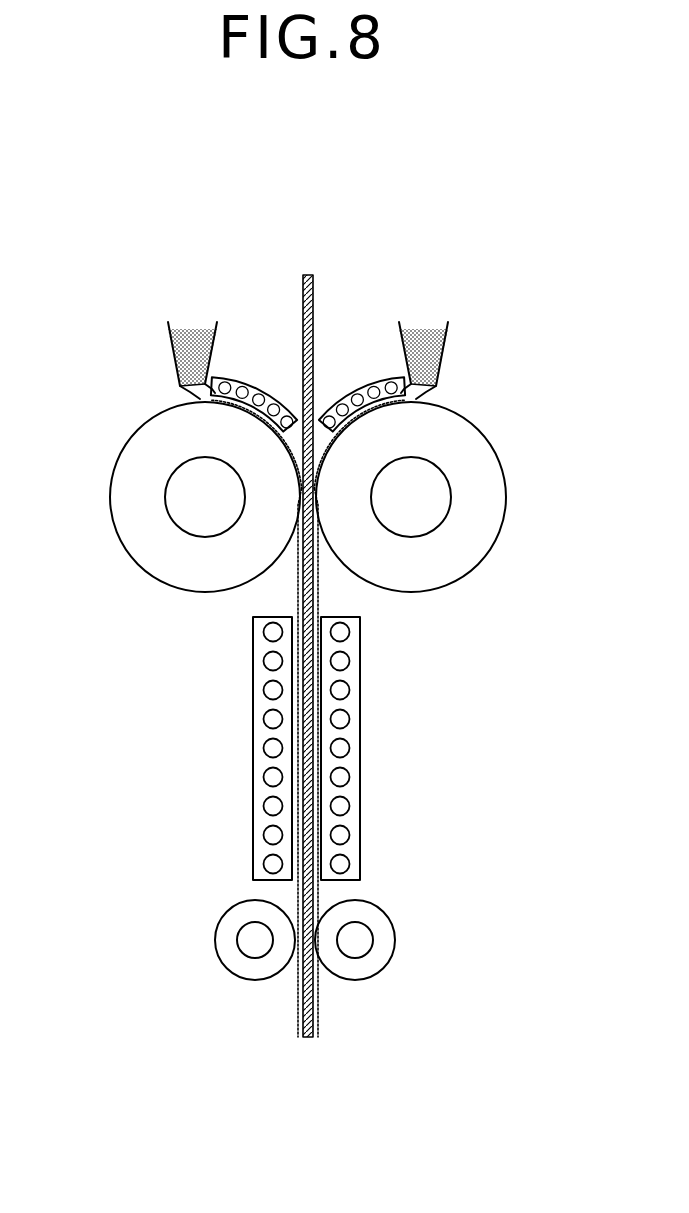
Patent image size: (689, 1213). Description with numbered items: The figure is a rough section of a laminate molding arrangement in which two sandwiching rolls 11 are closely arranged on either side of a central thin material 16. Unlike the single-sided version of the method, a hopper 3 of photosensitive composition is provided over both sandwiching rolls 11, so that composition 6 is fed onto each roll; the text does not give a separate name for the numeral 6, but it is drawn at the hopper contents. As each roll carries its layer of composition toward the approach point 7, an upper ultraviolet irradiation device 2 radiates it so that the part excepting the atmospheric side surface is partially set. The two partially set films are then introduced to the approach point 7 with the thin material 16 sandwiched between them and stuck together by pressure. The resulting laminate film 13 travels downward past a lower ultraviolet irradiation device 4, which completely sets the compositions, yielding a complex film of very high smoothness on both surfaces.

The thin material 16 is at (313, 283).
The sandwiching rolls 11 is at (123, 513).
The hopper 3 is at (168, 323).
The resin powder 6 is at (193, 333).
The upper ultraviolet irradiation device 2 is at (243, 383).
The approach point 7 is at (318, 513).
The laminate film 13 is at (297, 595).
The lower ultraviolet irradiation device 4 is at (267, 780).